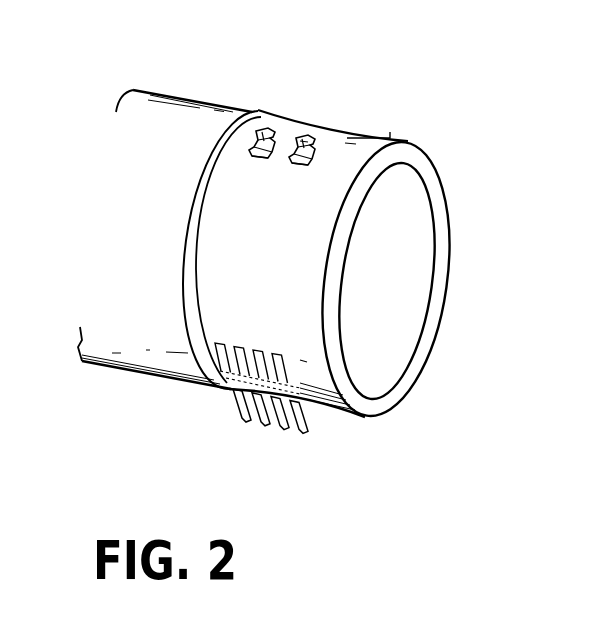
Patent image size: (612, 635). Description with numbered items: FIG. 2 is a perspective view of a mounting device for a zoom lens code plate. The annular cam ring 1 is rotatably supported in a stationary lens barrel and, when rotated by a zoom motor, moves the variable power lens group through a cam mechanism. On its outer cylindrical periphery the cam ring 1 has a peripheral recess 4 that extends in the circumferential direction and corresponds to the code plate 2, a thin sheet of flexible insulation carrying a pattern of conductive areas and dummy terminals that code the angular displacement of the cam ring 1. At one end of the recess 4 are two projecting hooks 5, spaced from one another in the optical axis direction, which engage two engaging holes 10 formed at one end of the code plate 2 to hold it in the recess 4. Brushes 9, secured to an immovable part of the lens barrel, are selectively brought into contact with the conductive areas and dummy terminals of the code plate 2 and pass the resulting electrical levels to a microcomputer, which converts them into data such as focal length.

The cam ring 1 is at (102, 352).
The code plate 2 is at (325, 138).
The peripheral recess 4 is at (232, 138).
The projecting hooks 5 is at (312, 132).
The brushes 9 is at (265, 420).
The engaging holes 10 is at (293, 165).